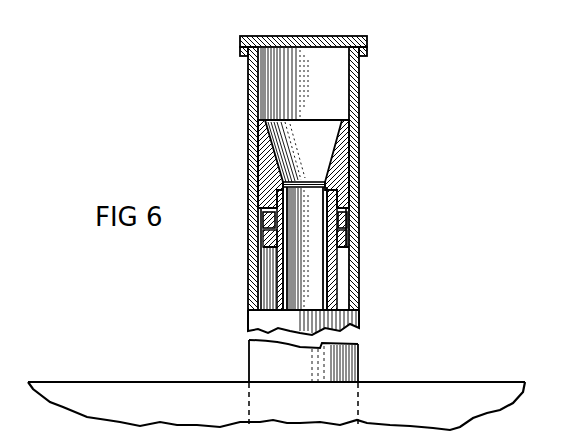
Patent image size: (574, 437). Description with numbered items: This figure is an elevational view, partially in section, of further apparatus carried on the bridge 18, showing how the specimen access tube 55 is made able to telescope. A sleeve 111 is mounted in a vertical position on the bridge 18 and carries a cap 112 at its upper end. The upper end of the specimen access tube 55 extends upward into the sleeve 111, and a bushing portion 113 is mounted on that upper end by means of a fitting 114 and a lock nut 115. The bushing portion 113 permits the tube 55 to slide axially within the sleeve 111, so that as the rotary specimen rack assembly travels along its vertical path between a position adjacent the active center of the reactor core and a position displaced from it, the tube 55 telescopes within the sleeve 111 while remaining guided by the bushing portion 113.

The bridge 18 is at (412, 379).
The specimen access tube 55 is at (331, 292).
The sleeve 111 is at (358, 228).
The cap 112 is at (368, 47).
The bushing portion 113 is at (352, 151).
The fitting 114 is at (356, 208).
The lock nut 115 is at (343, 242).